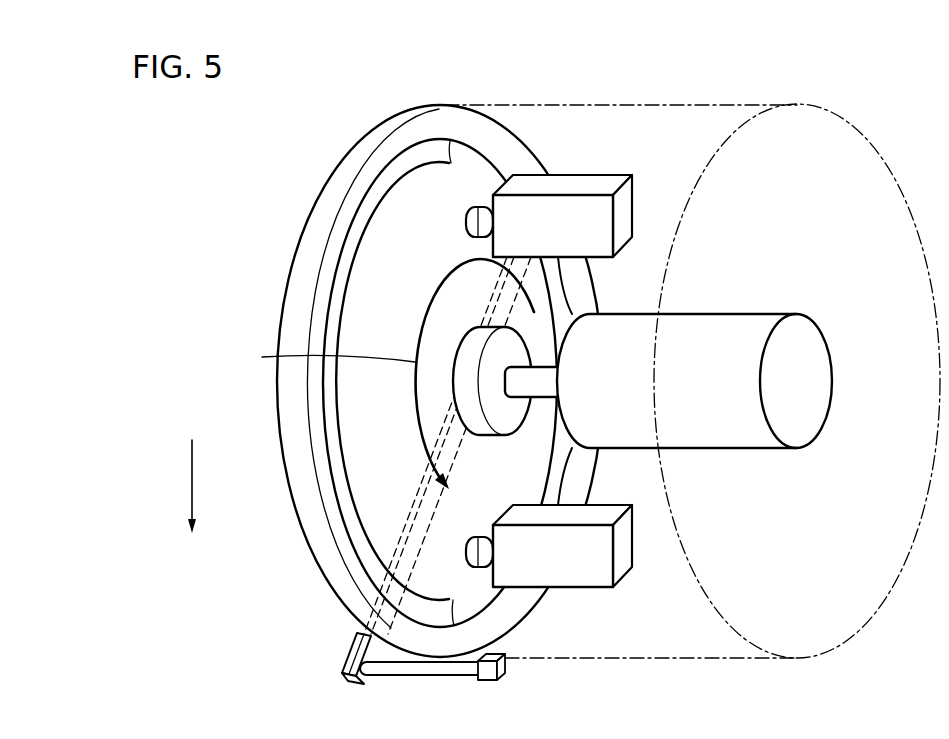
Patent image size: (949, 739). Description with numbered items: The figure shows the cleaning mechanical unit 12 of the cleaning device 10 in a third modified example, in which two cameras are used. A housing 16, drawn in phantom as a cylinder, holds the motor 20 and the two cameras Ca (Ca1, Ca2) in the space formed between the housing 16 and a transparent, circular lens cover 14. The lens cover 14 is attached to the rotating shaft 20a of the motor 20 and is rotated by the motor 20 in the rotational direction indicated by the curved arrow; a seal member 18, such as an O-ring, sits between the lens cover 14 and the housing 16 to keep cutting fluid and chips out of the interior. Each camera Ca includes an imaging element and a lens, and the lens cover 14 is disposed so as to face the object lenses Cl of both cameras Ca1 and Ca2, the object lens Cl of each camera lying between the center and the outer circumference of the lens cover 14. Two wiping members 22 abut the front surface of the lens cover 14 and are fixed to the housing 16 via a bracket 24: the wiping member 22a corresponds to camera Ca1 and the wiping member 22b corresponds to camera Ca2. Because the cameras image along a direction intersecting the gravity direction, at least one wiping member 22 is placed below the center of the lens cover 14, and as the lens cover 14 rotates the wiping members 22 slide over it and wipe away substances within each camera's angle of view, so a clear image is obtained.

The cleaning device 10 is at (165, 184).
The cleaning mechanical unit 12 is at (731, 96).
The lens cover 14 is at (280, 284).
The housing 16 is at (604, 658).
The seal member 18 is at (342, 491).
The motor 20 is at (742, 430).
The rotating shaft 20a is at (543, 390).
The wiping member 22 is at (498, 470).
The wiping member 22a is at (530, 289).
The wiping member 22b is at (353, 652).
The bracket 24 is at (384, 673).
The camera Ca is at (559, 386).
The camera Ca1 is at (582, 185).
The camera Ca2 is at (590, 579).
The object lens Cl is at (465, 221).